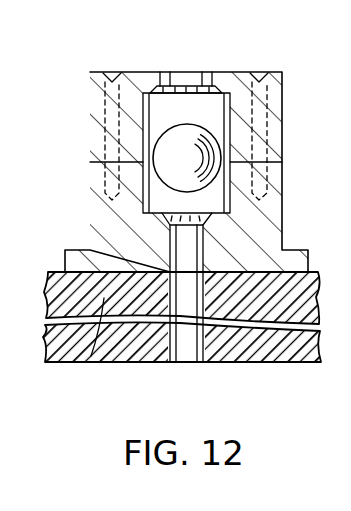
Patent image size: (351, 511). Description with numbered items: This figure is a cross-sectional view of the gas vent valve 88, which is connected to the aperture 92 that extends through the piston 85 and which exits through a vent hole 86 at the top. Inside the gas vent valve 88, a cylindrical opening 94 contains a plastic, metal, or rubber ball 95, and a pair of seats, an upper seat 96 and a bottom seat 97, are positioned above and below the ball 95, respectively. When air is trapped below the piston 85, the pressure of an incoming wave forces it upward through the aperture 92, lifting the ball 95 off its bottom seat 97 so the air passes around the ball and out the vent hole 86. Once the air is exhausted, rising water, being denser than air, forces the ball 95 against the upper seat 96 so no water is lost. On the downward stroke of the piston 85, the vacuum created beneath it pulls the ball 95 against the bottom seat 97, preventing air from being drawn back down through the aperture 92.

The piston 85 is at (131, 352).
The vent hole 86 is at (152, 84).
The gas vent valve 88 is at (90, 117).
The aperture 92 is at (188, 364).
The cylindrical opening 94 is at (146, 178).
The ball 95 is at (154, 152).
The upper seat 96 is at (203, 95).
The bottom seat 97 is at (168, 210).